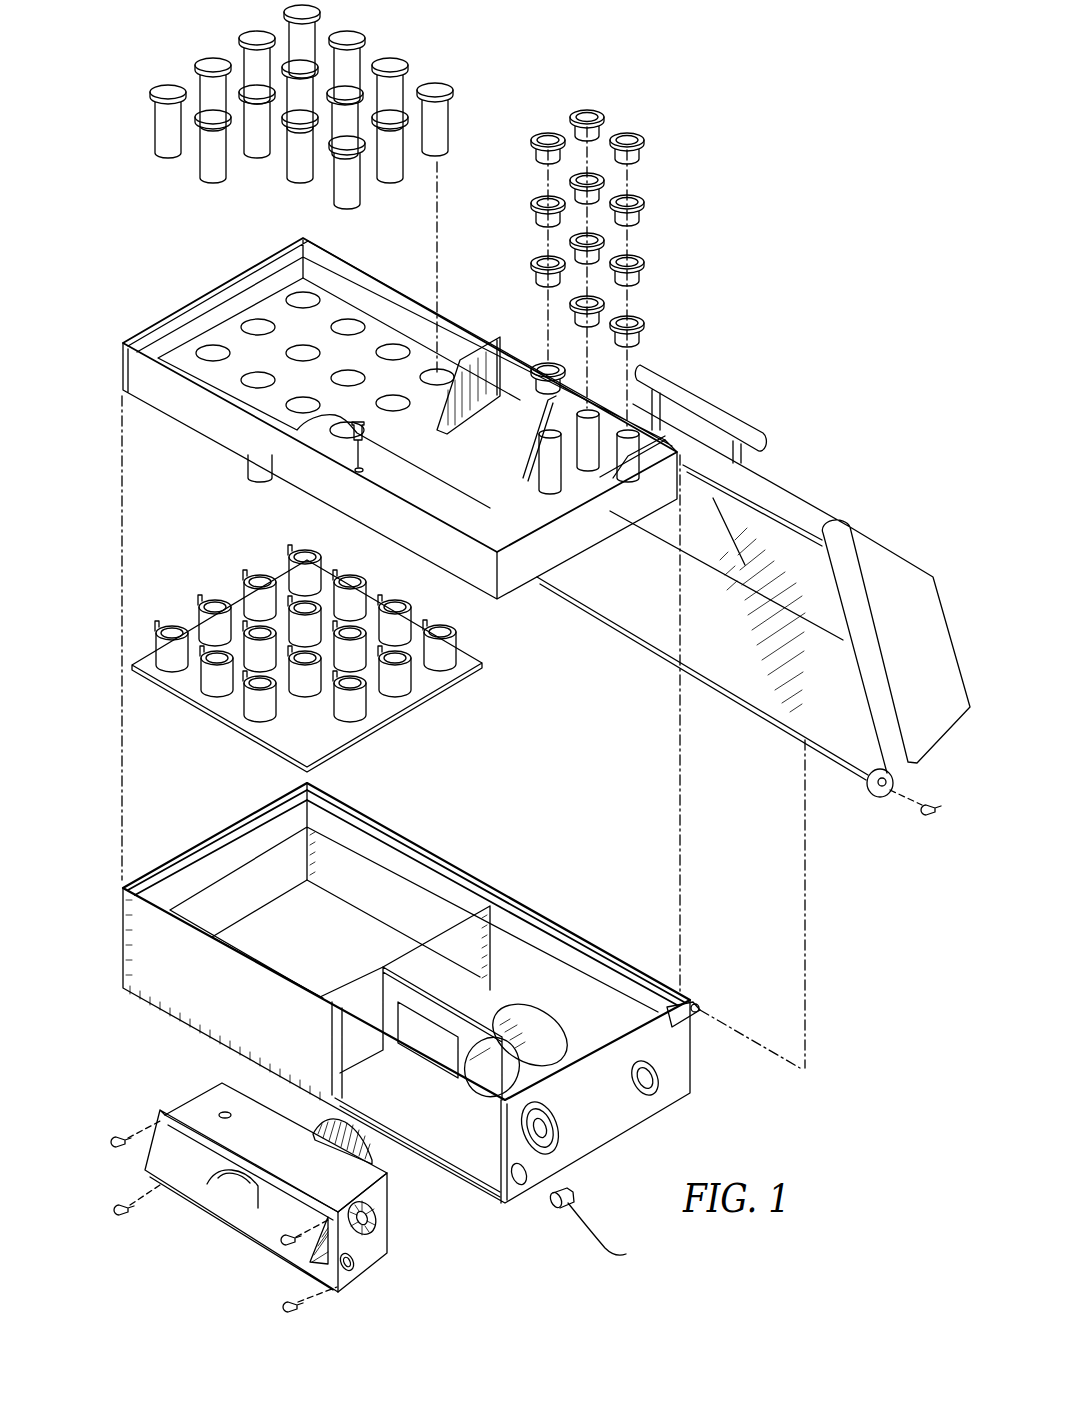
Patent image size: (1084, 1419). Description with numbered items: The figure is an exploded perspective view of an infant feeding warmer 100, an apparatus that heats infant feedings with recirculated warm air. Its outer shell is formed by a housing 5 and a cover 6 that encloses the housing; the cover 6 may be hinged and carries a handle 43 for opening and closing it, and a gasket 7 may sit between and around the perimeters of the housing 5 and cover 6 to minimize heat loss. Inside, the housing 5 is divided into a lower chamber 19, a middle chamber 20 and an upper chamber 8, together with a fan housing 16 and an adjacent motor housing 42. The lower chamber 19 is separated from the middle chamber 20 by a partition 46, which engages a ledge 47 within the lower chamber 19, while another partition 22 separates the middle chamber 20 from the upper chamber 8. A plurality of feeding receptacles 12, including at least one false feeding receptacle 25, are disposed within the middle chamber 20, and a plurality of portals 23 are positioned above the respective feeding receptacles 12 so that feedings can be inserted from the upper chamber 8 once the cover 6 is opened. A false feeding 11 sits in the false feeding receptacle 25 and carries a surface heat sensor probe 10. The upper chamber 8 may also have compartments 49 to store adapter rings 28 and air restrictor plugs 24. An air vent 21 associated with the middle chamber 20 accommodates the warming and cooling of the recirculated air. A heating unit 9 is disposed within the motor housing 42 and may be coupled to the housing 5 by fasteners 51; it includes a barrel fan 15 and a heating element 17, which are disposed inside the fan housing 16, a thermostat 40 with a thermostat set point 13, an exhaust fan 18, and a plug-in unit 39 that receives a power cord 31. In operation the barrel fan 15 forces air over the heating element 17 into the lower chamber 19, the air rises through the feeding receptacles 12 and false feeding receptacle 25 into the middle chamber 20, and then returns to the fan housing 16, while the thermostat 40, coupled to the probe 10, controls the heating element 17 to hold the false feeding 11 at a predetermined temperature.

The infant feeding warmer 100 is at (530, 683).
The air restrictor plugs 24 is at (152, 130).
The adapter rings 28 is at (645, 140).
The gasket 7 is at (258, 263).
The partition 22 is at (235, 330).
The portals 23 is at (345, 325).
The surface heat sensor probe 10 is at (366, 440).
The false feeding 11 is at (250, 476).
The compartments 49 is at (505, 452).
The upper chamber 8 is at (510, 533).
The handle 43 is at (718, 410).
The cover 6 is at (805, 508).
The middle chamber 20 is at (307, 659).
The partition 46 is at (385, 705).
The feeding receptacles 12 is at (175, 660).
The false feeding receptacle 25 is at (265, 712).
The housing 5 is at (580, 1152).
The ledge 47 is at (410, 875).
The lower chamber 19 is at (355, 956).
The motor housing 42 is at (437, 1116).
The fan housing 16 is at (535, 1022).
The barrel fan 15 is at (372, 1145).
The air vent 21 is at (655, 1088).
The power cord 31 is at (556, 1214).
The heating unit 9 is at (270, 1207).
The heating element 17 is at (248, 1080).
The thermostat 40 is at (230, 1205).
The thermostat set point 13 is at (245, 1190).
The exhaust fan 18 is at (380, 1218).
The plug-in unit 39 is at (355, 1272).
The fasteners 51 is at (120, 1138).